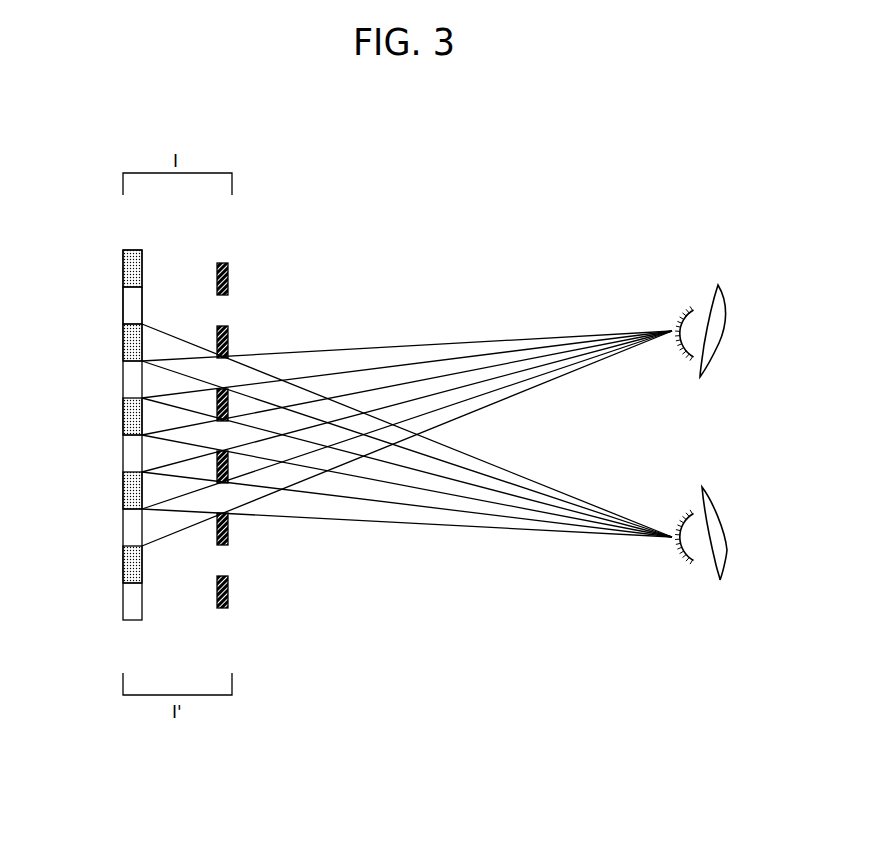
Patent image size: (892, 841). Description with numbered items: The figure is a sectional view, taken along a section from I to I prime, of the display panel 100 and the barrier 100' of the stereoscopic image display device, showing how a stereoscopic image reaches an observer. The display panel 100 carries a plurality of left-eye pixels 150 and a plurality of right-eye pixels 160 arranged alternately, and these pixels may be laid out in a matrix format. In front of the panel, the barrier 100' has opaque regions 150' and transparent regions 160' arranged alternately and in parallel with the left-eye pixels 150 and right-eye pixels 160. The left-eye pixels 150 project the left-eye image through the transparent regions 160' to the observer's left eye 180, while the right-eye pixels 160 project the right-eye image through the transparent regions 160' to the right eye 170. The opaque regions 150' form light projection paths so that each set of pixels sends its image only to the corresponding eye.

The display panel 100 is at (124, 436).
The left-eye pixel 150 is at (160, 266).
The right-eye pixel 160 is at (160, 302).
The barrier 100' is at (229, 432).
The opaque region 150' is at (250, 274).
The transparent region 160' is at (250, 305).
The right eye 170 is at (681, 311).
The left eye 180 is at (681, 511).